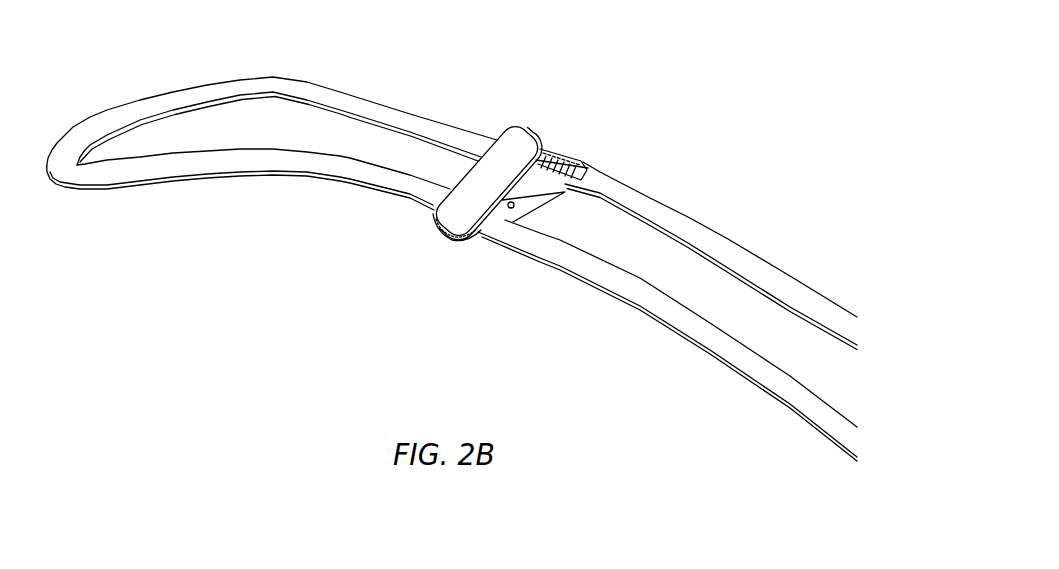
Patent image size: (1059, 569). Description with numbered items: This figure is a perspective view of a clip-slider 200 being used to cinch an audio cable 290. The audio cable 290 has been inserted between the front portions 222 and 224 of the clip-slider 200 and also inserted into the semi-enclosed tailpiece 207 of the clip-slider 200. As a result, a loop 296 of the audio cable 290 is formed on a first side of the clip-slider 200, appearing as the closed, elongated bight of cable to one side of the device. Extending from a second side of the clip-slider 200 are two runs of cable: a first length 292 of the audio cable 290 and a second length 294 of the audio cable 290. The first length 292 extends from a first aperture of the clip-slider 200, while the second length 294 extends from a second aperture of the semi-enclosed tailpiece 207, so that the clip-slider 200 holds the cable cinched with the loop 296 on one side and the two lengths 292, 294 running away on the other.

The audio cable 290 is at (99, 76).
The loop 296 is at (264, 151).
The second length 294 is at (452, 213).
The first length 292 is at (667, 340).
The clip-slider 200 is at (571, 222).
The front portion 222 is at (462, 183).
The front portion 224 is at (467, 248).
The semi-enclosed tailpiece 207 is at (578, 155).